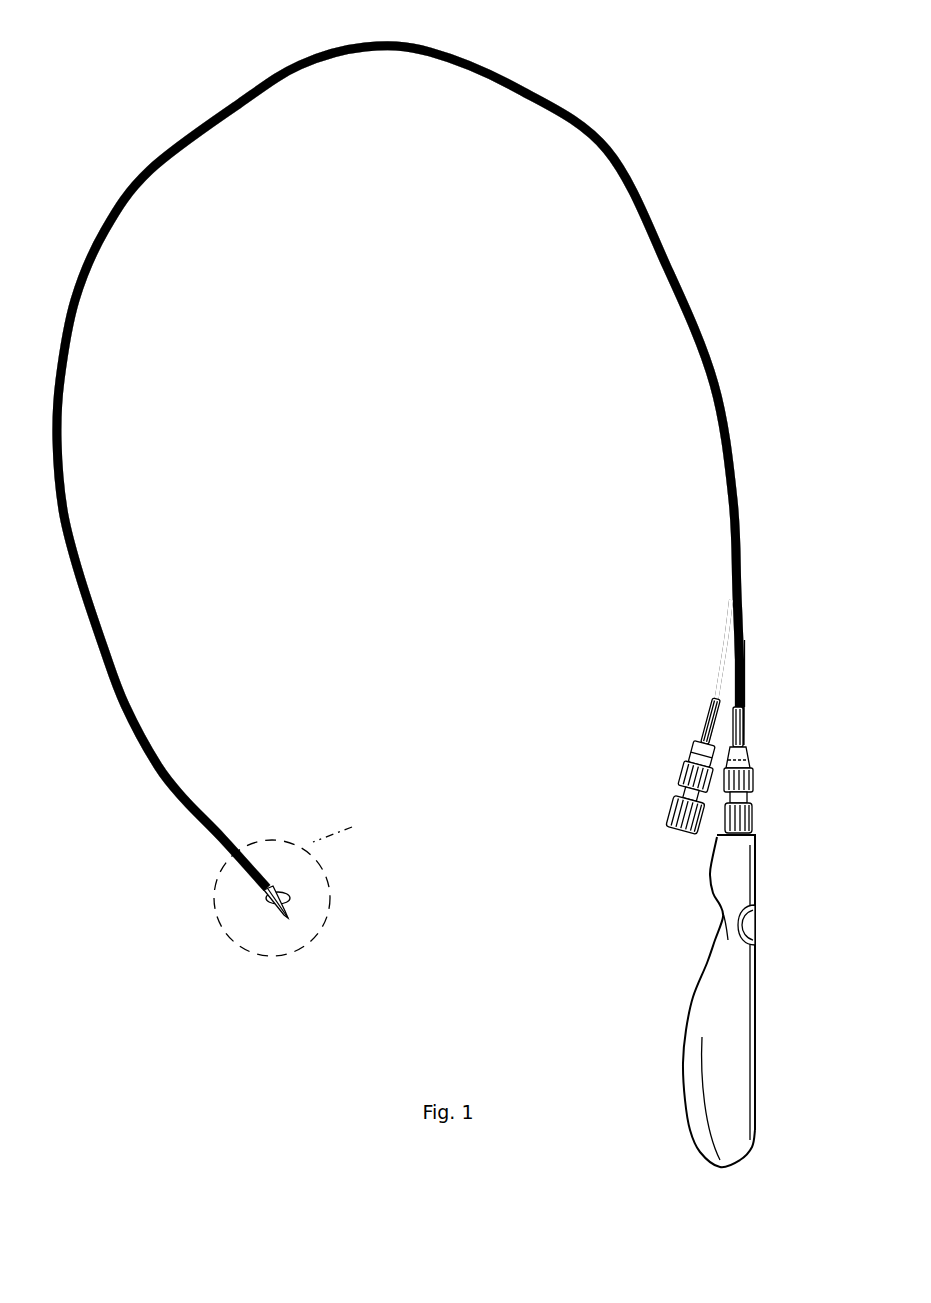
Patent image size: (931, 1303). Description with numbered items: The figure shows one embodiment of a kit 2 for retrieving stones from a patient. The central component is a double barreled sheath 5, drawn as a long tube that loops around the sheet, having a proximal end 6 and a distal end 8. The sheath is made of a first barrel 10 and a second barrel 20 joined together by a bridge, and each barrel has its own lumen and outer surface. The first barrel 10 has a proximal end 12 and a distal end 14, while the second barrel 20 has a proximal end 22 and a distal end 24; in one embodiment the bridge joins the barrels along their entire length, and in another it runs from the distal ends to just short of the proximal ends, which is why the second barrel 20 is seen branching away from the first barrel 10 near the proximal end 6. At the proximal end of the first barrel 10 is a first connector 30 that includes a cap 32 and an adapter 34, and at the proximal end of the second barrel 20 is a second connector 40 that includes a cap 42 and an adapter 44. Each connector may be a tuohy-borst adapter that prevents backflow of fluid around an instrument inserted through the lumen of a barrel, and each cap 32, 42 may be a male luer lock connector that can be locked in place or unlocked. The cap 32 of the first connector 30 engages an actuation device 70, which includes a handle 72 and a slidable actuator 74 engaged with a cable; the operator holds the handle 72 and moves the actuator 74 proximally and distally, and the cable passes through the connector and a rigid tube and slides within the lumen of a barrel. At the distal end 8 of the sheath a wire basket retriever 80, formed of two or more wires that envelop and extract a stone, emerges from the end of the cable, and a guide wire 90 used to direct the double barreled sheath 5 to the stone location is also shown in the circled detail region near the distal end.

The kit 2 is at (147, 94).
The double barreled sheath 5 is at (613, 148).
The proximal end 6 is at (743, 692).
The distal end 8 is at (250, 888).
The first barrel 10 is at (743, 668).
The proximal end 12 is at (745, 737).
The distal end 14 is at (240, 855).
The second barrel 20 is at (718, 692).
The proximal end 22 is at (710, 726).
The distal end 24 is at (222, 832).
The first connector 30 is at (754, 780).
The cap 32 is at (754, 820).
The adapter 34 is at (753, 777).
The second connector 40 is at (681, 780).
The cap 42 is at (668, 807).
The adapter 44 is at (687, 767).
The actuation device 70 is at (712, 998).
The handle 72 is at (728, 1057).
The actuator 74 is at (757, 922).
The wire basket retriever 80 is at (288, 898).
The guide wire 90 is at (250, 923).